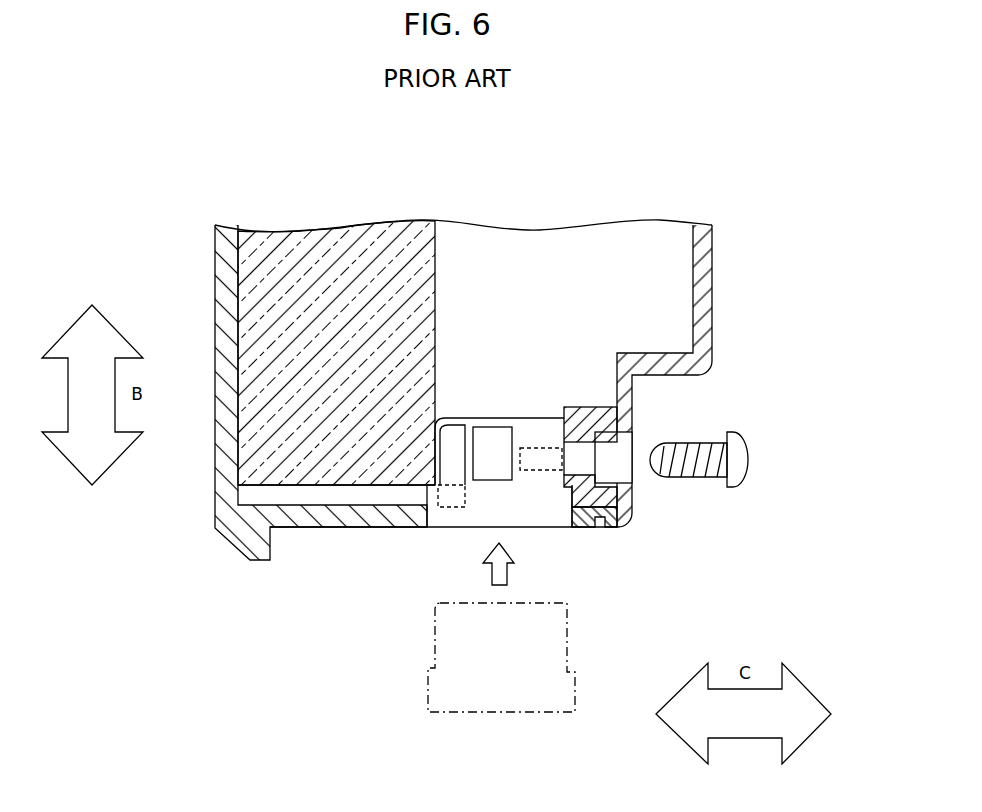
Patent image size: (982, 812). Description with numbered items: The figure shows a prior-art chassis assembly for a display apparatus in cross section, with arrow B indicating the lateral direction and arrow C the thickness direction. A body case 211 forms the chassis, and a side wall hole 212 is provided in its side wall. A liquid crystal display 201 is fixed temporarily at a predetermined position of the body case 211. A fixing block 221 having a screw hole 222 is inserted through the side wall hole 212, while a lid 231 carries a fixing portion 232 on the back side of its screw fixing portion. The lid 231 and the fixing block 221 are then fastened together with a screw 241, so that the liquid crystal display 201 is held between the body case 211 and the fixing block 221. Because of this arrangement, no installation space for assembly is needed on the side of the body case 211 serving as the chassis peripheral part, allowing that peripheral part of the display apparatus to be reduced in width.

The liquid crystal display 201 is at (318, 462).
The body case 211 is at (227, 543).
The side wall hole 212 is at (566, 527).
The fixing block 221 is at (461, 515).
The screw hole 222 is at (530, 448).
The lid 231 is at (697, 360).
The fixing portion 232 is at (583, 407).
The screw 241 is at (688, 477).